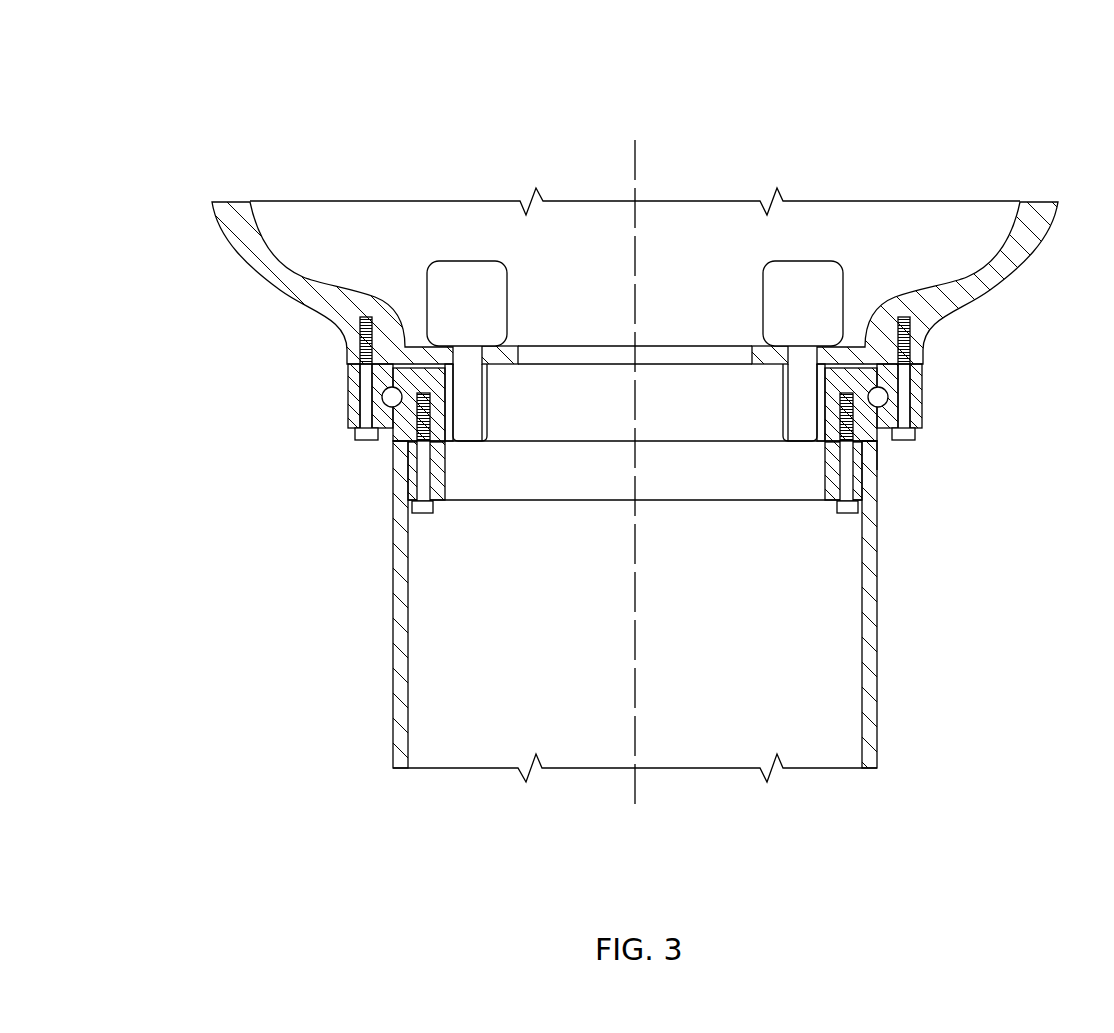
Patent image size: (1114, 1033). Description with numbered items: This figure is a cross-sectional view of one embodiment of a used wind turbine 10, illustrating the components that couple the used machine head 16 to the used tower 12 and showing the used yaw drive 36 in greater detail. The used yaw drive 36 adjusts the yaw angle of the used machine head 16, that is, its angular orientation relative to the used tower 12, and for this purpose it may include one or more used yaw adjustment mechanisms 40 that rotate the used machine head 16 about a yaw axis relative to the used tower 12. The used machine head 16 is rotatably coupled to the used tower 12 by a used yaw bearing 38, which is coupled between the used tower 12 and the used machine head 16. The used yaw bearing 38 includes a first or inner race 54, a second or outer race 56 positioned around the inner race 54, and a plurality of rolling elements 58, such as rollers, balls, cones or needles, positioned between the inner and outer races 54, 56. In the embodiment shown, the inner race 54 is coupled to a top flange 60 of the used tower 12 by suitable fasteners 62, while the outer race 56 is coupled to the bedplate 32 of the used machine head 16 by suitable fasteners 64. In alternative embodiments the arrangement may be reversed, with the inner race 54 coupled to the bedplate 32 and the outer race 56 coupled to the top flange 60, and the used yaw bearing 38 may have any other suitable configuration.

The used wind turbine 10 is at (198, 119).
The used tower 12 is at (395, 735).
The used machine head 16 is at (1014, 299).
The bedplate 32 is at (757, 345).
The used yaw drive 36 is at (533, 310).
The used yaw bearing 38 is at (387, 449).
The used yaw adjustment mechanism 40 is at (452, 275).
The inner race 54 is at (877, 448).
The outer race 56 is at (345, 427).
The rolling elements 58 is at (873, 297).
The top flange 60 is at (438, 468).
The fasteners 62 is at (425, 515).
The fasteners 64 is at (367, 442).